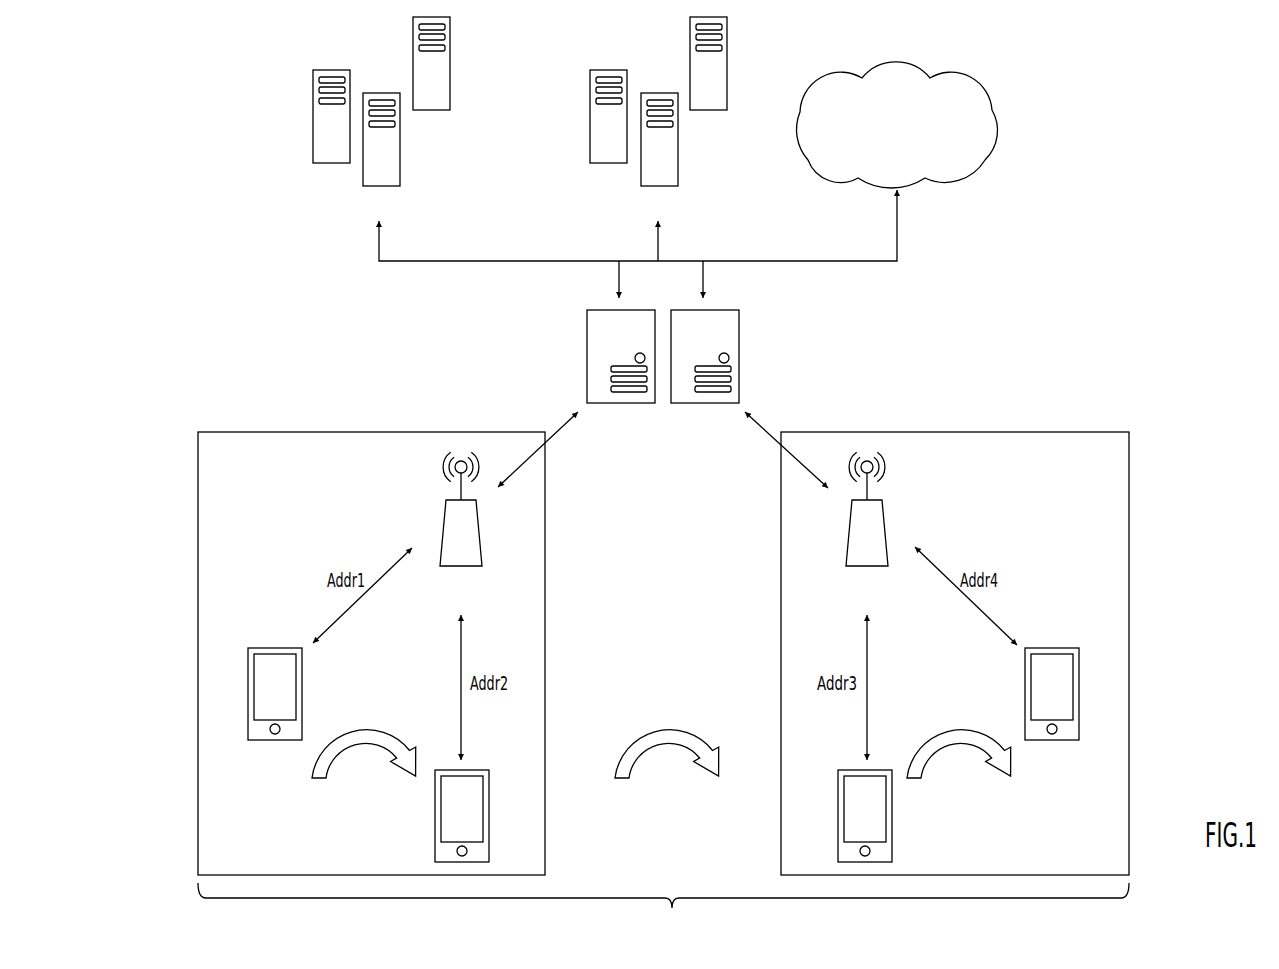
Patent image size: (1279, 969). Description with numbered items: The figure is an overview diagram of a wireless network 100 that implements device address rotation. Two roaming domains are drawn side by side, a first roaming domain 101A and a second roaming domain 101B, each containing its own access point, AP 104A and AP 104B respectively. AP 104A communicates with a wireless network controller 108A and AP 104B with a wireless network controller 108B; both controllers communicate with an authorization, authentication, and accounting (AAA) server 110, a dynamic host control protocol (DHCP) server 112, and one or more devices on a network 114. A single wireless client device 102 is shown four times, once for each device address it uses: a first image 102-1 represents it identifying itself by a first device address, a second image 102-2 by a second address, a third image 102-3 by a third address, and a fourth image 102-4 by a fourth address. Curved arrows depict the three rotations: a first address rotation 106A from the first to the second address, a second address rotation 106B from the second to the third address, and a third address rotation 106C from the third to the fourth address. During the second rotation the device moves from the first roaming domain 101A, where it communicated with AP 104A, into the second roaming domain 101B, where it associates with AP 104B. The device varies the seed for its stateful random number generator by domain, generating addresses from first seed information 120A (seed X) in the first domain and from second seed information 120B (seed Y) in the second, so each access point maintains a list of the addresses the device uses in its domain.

The wireless network 100 is at (230, 295).
The first roaming domain 101A is at (228, 432).
The second roaming domain 101B is at (1100, 432).
The wireless client device 102 is at (663, 911).
The first image 102-1 is at (248, 684).
The second image 102-2 is at (489, 806).
The third image 102-3 is at (837, 806).
The fourth image 102-4 is at (1105, 668).
The access point 104A is at (482, 562).
The access point 104B is at (846, 562).
The first address rotation 106A is at (340, 725).
The second address rotation 106B is at (645, 725).
The third address rotation 106C is at (937, 725).
The wireless network controller 108A is at (587, 366).
The wireless network controller 108B is at (738, 366).
The authorization, authentication, and accounting (AAA) server 110 is at (297, 88).
The dynamic host control protocol (DHCP) server 112 is at (572, 88).
The network 114 is at (796, 133).
The first seed information 120A is at (371, 455).
The second seed information 120B is at (957, 455).